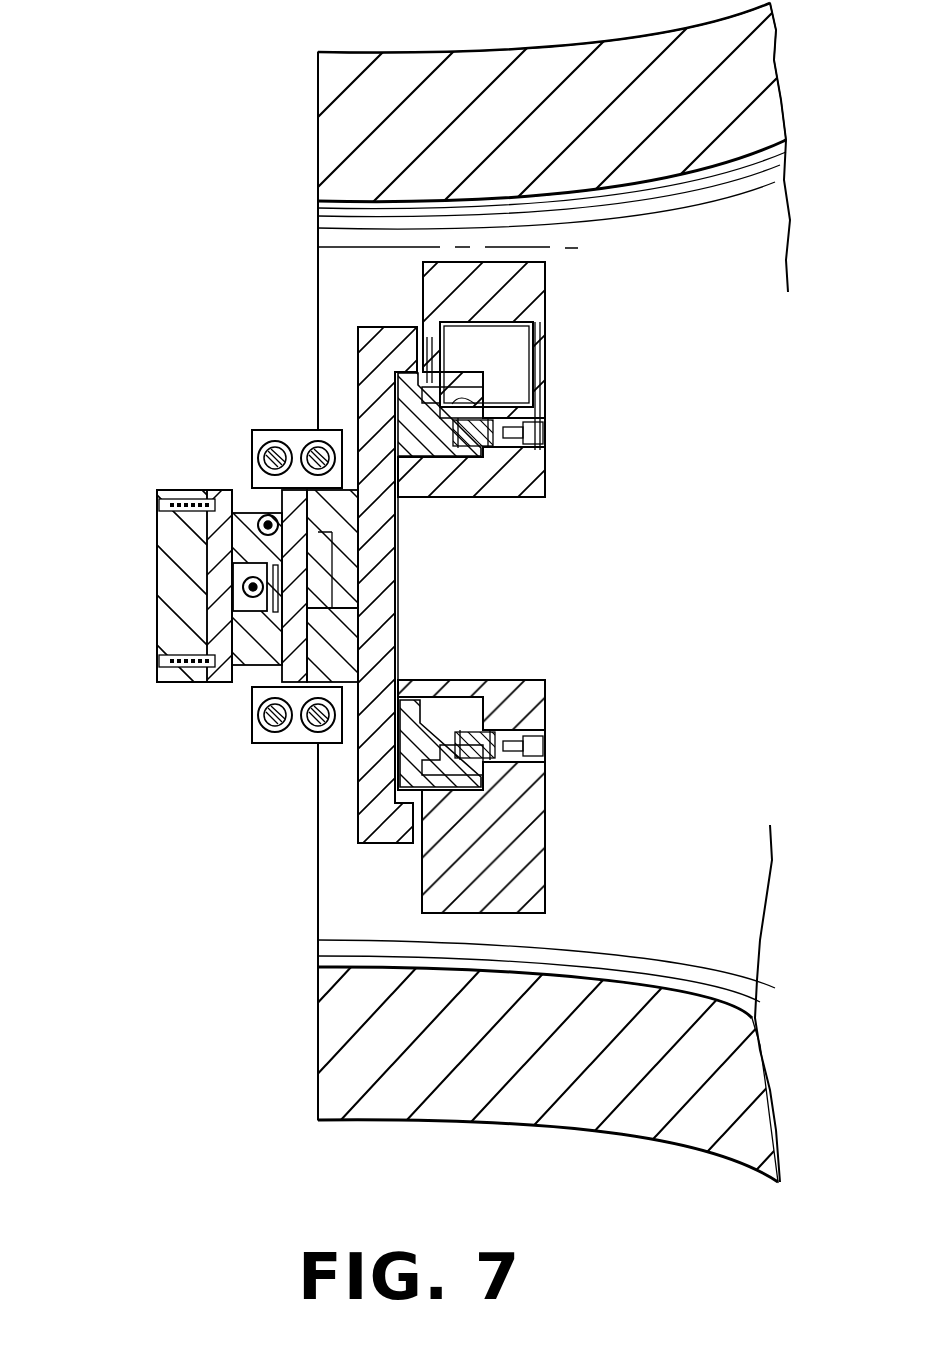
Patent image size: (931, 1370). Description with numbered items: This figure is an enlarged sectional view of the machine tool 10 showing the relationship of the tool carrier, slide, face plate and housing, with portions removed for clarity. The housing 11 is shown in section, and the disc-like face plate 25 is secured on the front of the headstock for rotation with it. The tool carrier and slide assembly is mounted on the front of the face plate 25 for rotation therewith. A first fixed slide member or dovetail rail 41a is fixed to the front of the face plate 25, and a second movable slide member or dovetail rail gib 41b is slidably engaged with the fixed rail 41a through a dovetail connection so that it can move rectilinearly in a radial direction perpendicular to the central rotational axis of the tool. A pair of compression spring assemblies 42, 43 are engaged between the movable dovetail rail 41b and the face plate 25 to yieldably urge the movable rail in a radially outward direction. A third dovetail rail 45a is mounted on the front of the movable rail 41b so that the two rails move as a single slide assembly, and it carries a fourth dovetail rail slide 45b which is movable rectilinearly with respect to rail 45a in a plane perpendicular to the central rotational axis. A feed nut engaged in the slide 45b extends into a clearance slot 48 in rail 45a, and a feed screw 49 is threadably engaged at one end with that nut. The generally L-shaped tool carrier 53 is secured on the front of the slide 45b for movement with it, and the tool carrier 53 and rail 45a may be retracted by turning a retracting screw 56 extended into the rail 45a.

The machine tool 10 is at (618, 551).
The housing 11 is at (524, 884).
The face plate 25 is at (357, 352).
The first fixed slide member or dovetail rail 41a is at (350, 560).
The second movable slide member or dovetail rail gib 41b is at (350, 603).
The compression spring assembly 42 is at (275, 430).
The compression spring assembly 43 is at (268, 743).
The third dovetail rail 45a is at (232, 690).
The fourth dovetail rail slide 45b is at (213, 680).
The clearance slot 48 is at (232, 578).
The feed screw 49 is at (245, 590).
The tool carrier 53 is at (157, 630).
The retracting screw 56 is at (262, 516).